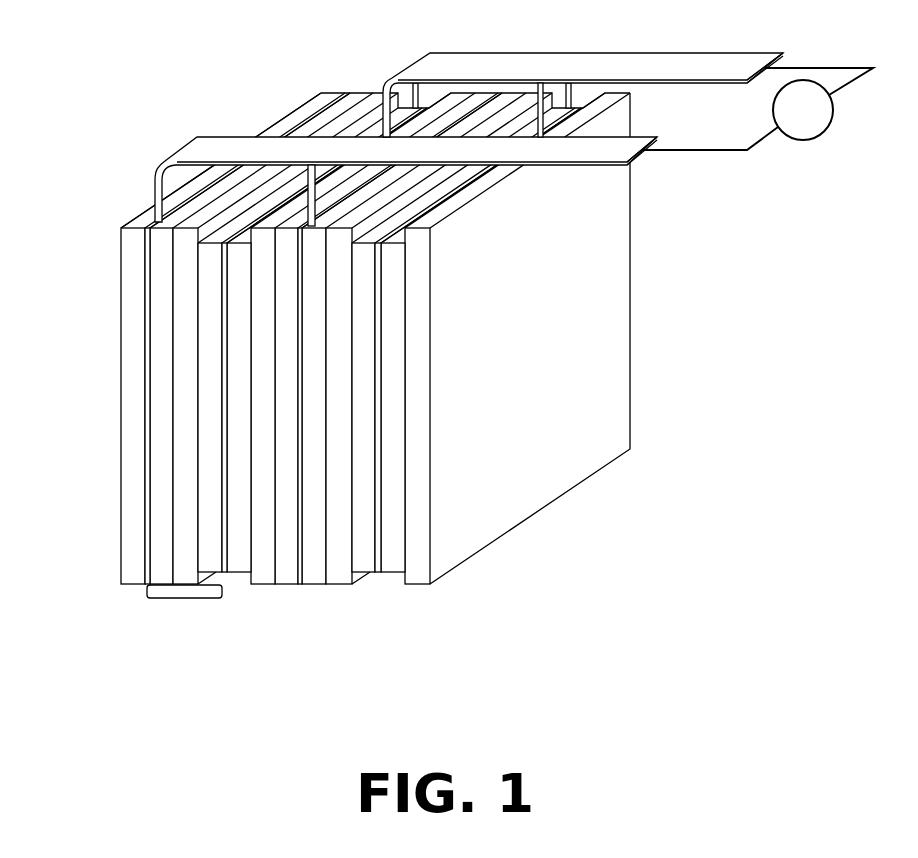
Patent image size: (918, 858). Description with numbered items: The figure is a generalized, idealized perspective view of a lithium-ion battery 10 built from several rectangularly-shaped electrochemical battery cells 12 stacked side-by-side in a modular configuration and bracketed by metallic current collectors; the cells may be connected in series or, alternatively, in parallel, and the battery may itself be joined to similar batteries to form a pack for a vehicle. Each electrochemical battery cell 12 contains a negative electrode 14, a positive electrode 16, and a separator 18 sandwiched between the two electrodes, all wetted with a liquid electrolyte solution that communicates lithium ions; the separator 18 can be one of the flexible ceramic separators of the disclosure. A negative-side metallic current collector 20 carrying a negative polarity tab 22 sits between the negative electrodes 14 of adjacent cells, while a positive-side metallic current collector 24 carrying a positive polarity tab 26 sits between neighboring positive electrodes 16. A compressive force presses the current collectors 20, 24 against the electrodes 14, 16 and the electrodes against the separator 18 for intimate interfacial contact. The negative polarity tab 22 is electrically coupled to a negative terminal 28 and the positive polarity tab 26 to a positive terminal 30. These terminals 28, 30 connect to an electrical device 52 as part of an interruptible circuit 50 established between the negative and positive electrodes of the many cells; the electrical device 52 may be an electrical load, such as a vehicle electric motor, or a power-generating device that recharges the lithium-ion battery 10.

The lithium-ion battery 10 is at (143, 90).
The electrochemical battery cell 12 is at (180, 600).
The negative electrode 14 is at (160, 495).
The positive electrode 16 is at (238, 308).
The separator 18 is at (185, 460).
The negative-side metallic current collector 20 is at (145, 360).
The negative polarity tab 22 is at (157, 188).
The positive-side metallic current collector 24 is at (222, 340).
The positive polarity tab 26 is at (362, 112).
The negative terminal 28 is at (627, 168).
The positive terminal 30 is at (666, 86).
The interruptible circuit 50 is at (751, 158).
The electrical device 52 is at (808, 115).